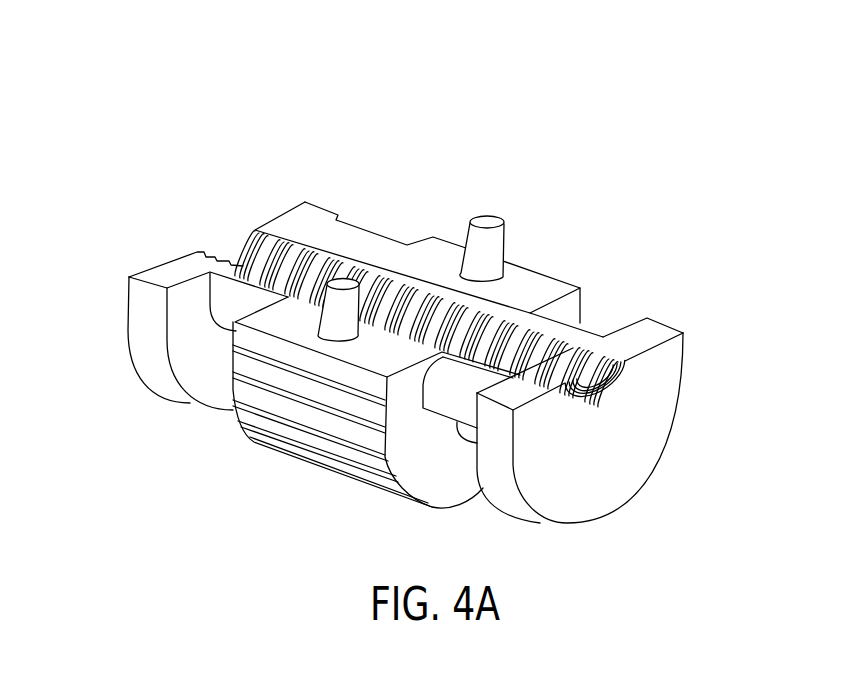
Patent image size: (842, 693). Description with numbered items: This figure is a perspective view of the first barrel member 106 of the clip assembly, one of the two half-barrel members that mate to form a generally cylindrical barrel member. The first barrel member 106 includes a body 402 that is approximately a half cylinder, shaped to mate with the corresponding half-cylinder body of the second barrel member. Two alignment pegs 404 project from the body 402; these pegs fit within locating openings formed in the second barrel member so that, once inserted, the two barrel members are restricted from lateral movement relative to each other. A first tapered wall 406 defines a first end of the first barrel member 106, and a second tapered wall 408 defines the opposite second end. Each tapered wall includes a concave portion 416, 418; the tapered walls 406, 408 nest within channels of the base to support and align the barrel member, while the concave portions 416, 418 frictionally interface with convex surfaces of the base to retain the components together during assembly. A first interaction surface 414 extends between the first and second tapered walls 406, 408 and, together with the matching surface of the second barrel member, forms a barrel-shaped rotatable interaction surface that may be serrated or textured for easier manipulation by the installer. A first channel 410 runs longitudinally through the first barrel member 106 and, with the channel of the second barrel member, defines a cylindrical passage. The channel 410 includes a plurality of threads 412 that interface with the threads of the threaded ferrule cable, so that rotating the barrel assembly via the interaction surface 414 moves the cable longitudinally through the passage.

The first barrel member 106 is at (215, 118).
The body 402 is at (320, 212).
The alignment pegs 404 is at (346, 284).
The first tapered wall 406 is at (570, 513).
The second tapered wall 408 is at (190, 348).
The first channel 410 is at (612, 383).
The threads 412 is at (543, 327).
The first interaction surface 414 is at (325, 458).
The concave portion 416 is at (607, 462).
The concave portion 418 is at (145, 265).